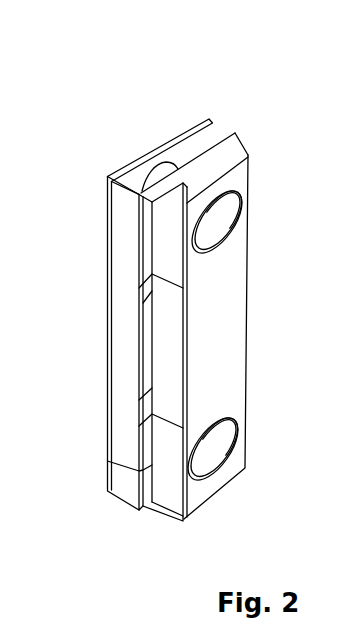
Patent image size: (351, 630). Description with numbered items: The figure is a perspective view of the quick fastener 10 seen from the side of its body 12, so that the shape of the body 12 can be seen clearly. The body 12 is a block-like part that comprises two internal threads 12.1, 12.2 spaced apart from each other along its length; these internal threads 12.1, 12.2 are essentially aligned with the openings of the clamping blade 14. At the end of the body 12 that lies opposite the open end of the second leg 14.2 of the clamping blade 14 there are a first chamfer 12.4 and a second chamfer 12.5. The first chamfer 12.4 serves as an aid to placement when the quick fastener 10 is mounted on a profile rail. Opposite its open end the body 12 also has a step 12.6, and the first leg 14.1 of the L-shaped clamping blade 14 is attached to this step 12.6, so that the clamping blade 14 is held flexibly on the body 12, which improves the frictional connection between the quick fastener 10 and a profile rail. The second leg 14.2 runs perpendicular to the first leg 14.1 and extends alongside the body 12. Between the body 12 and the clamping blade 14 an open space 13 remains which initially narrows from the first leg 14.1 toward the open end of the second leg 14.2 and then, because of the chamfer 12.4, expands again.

The quick fastener 10 is at (276, 83).
The body 12 is at (233, 330).
The internal thread 12.1 is at (238, 221).
The internal thread 12.2 is at (239, 453).
The first chamfer 12.4 is at (230, 132).
The second chamfer 12.5 is at (249, 148).
The step 12.6 is at (145, 470).
The open space 13 is at (138, 179).
The clamping blade 14 is at (122, 337).
The first leg 14.1 is at (122, 434).
The second leg 14.2 is at (173, 141).